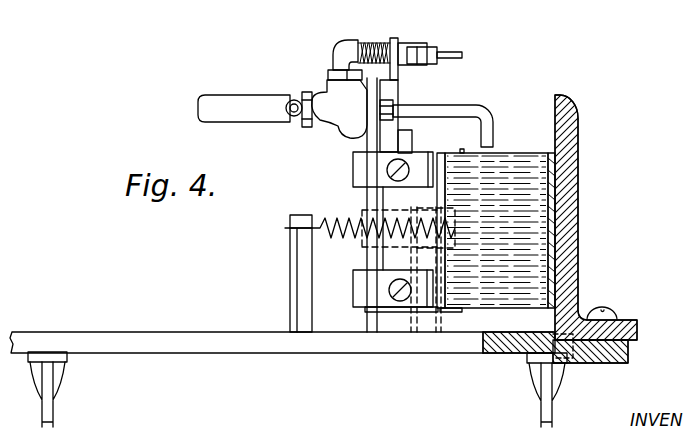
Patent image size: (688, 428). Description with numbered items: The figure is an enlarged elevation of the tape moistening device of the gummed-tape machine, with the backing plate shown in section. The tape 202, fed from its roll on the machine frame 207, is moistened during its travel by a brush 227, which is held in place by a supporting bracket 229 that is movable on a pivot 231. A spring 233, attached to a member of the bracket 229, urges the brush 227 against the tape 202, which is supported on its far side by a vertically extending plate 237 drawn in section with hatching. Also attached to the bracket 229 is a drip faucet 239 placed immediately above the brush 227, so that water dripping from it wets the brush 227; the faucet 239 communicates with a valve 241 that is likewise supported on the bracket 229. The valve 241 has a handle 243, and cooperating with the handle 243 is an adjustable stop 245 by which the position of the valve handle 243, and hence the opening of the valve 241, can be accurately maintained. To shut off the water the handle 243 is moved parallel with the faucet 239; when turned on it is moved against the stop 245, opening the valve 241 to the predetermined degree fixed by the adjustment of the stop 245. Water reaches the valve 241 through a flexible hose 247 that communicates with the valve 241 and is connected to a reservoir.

The tape 202 is at (553, 243).
The frame 207 is at (213, 338).
The brush 227 is at (524, 163).
The supporting bracket 229 is at (345, 185).
The pivot 231 is at (412, 318).
The spring 233 is at (348, 236).
The vertically extending plate 237 is at (573, 206).
The drip faucet 239 is at (450, 113).
The valve 241 is at (347, 122).
The handle 243 is at (343, 52).
The adjustable stop 245 is at (380, 47).
The flexible hose 247 is at (245, 108).